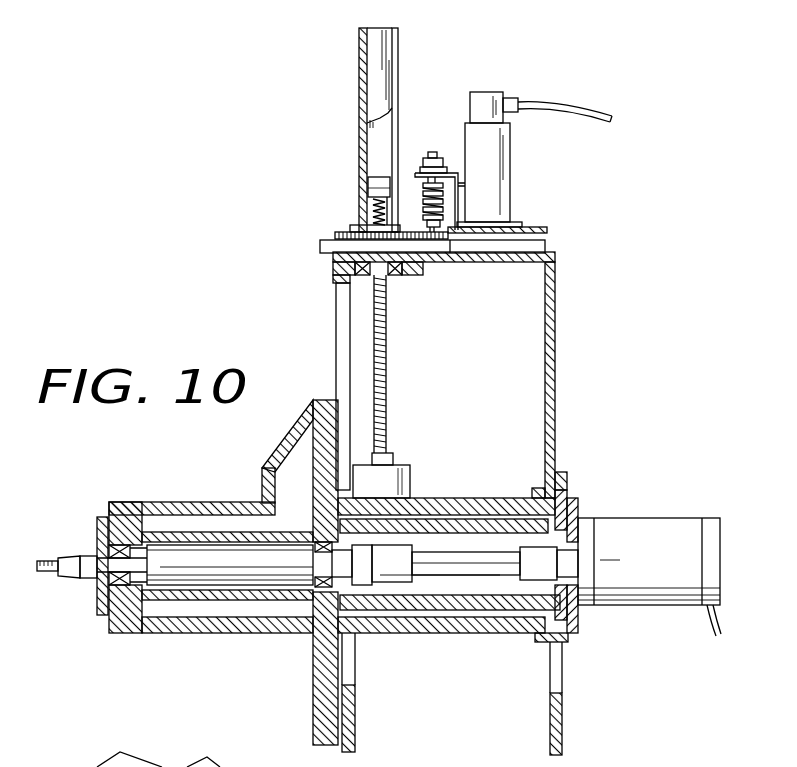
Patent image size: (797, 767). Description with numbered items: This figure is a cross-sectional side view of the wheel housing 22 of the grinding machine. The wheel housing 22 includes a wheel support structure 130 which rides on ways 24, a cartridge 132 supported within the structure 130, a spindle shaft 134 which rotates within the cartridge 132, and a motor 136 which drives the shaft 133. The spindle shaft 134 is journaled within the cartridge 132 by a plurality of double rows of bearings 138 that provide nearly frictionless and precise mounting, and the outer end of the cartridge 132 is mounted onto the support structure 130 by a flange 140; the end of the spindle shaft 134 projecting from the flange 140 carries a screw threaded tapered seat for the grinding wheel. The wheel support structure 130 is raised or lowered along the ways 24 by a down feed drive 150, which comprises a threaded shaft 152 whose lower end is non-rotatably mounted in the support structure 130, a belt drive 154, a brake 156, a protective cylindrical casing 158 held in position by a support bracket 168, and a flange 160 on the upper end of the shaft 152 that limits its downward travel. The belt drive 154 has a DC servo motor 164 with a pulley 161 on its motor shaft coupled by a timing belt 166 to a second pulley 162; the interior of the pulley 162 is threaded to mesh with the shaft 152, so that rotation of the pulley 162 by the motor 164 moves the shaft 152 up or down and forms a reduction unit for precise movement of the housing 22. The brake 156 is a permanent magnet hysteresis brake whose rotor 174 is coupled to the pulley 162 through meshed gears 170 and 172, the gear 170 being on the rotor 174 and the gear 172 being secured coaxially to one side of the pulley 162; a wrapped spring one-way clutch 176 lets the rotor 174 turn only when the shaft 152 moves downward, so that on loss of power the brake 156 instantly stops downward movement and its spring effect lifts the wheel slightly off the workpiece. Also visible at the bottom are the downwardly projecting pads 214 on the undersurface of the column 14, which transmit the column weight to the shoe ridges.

The column 14 is at (557, 361).
The wheel housing 22 is at (621, 461).
The ways 24 is at (340, 323).
The wheel support structure 130 is at (250, 488).
The cartridge 132 is at (222, 600).
The shaft 133 is at (451, 578).
The spindle shaft 134 is at (88, 557).
The motor 136 is at (632, 527).
The bearings 138 is at (310, 600).
The flange 140 is at (97, 583).
The down feed drive 150 is at (306, 222).
The threaded shaft 152 is at (386, 361).
The belt drive 154 is at (503, 264).
The brake 156 is at (437, 150).
The protective cylindrical casing 158 is at (359, 123).
The flange 160 is at (372, 188).
The pulley 161 is at (540, 237).
The pulley 162 is at (320, 242).
The DC servo motor 164 is at (500, 190).
The belt 166 is at (448, 264).
The support bracket 168 is at (409, 231).
The gear 170 is at (453, 254).
The gear 172 is at (343, 232).
The hysteresis rotor 174 is at (465, 184).
The one-way clutch 176 is at (445, 206).
The pads 214 is at (100, 765).